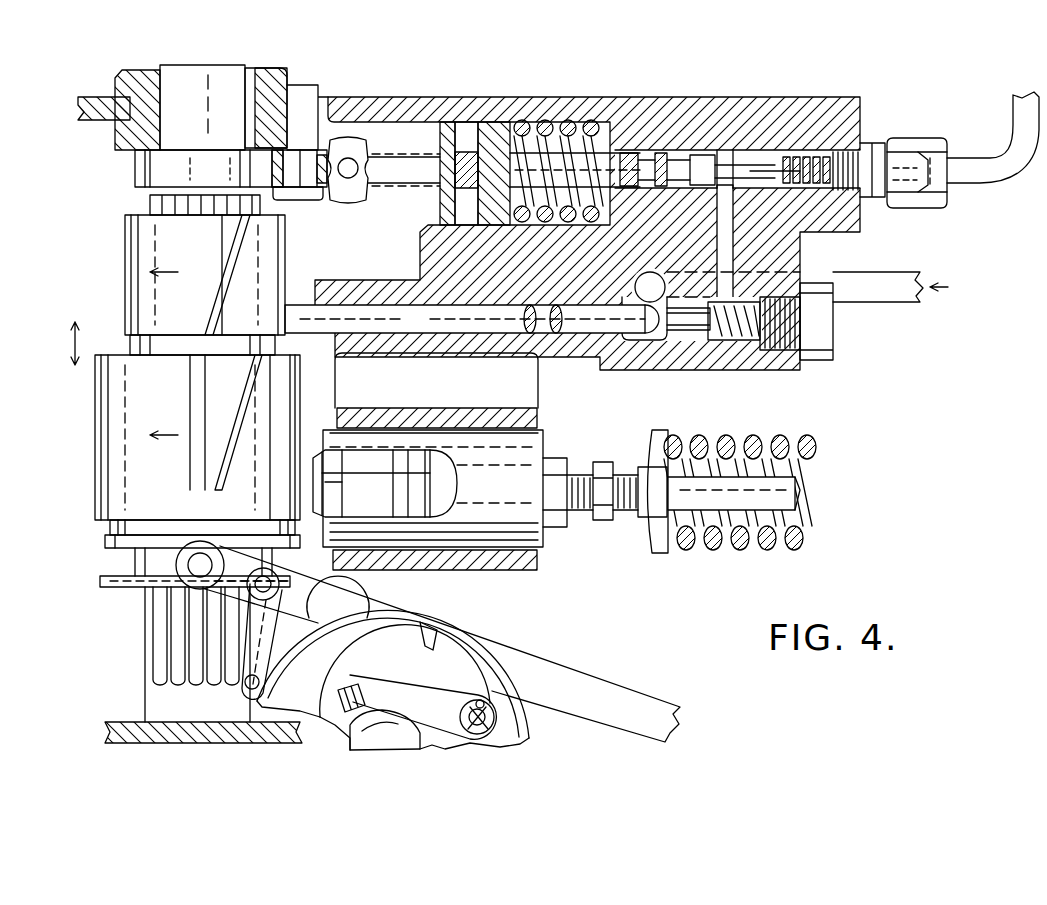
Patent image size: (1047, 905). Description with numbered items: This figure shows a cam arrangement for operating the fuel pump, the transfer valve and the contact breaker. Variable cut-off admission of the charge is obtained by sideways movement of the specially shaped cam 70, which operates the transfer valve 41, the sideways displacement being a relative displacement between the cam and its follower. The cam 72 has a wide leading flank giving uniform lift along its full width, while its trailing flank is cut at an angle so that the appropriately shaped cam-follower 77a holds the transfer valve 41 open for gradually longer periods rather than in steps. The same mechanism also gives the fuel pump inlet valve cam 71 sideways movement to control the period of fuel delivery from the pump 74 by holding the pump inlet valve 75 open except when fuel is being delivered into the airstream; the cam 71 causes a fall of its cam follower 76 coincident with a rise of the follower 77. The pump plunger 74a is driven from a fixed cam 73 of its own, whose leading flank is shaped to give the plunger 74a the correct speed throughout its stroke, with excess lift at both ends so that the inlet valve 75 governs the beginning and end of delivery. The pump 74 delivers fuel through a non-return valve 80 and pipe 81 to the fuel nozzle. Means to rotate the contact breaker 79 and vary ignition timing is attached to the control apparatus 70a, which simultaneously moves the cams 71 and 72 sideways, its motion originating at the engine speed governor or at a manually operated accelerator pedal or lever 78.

The transfer valve 41 is at (797, 492).
The cam 70 is at (111, 320).
The control apparatus 70a is at (110, 594).
The fuel pump inlet valve cam 71 is at (125, 250).
The cam 72 is at (95, 436).
The fixed cam 73 is at (135, 168).
The fuel pump 74 is at (642, 98).
The pump plunger 74a is at (672, 165).
The pump inlet valve 75 is at (690, 350).
The cam follower 76 is at (290, 306).
The follower 77 is at (530, 530).
The cam-follower 77a is at (365, 505).
The accelerator pedal or lever 78 is at (585, 690).
The contact breaker 79 is at (522, 740).
The non-return valve 80 is at (784, 160).
The pipe 81 is at (975, 178).